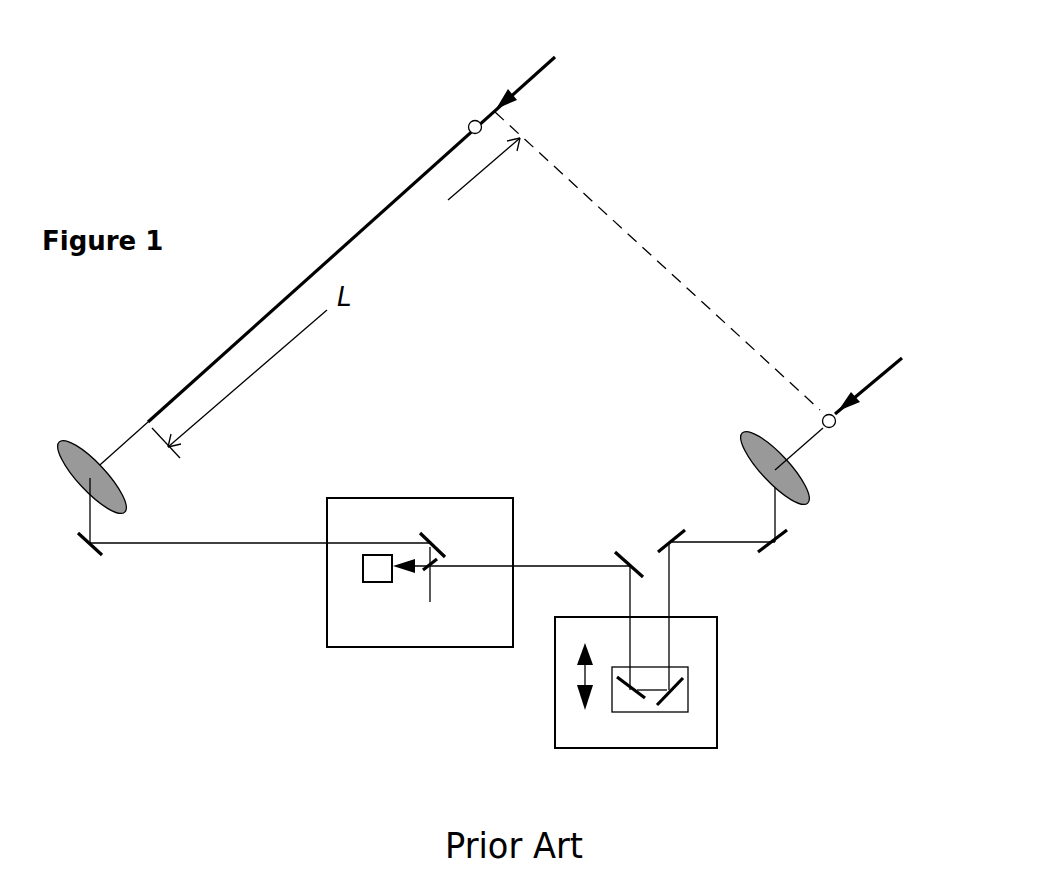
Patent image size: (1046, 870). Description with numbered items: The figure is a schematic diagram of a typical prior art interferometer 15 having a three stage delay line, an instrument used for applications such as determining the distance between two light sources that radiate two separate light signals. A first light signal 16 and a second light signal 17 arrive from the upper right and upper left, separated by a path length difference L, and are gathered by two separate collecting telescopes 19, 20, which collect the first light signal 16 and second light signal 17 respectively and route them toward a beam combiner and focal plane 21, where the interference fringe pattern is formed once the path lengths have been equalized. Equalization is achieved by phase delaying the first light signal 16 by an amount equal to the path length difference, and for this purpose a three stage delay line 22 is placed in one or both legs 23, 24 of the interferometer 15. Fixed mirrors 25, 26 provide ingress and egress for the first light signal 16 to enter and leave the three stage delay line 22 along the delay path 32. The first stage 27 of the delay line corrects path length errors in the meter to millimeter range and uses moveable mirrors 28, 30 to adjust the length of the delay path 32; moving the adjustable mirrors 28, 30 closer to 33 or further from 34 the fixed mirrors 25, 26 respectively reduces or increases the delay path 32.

The interferometer 15 is at (742, 149).
The first light signal 16 is at (855, 394).
The second light signal 17 is at (504, 94).
The collecting telescope 19 is at (790, 480).
The collecting telescope 20 is at (88, 452).
The beam combiner and focal plane 21 is at (388, 648).
The three stage delay line 22 is at (718, 632).
The leg 23 is at (212, 542).
The leg 24 is at (684, 526).
The fixed mirror 25 is at (673, 532).
The fixed mirror 26 is at (622, 550).
The first stage 27 is at (690, 707).
The moveable mirror 28 is at (633, 692).
The moveable mirror 30 is at (670, 700).
The delay path 32 is at (670, 595).
The direction closer to fixed mirrors 33 is at (577, 657).
The direction further from fixed mirrors 34 is at (578, 705).